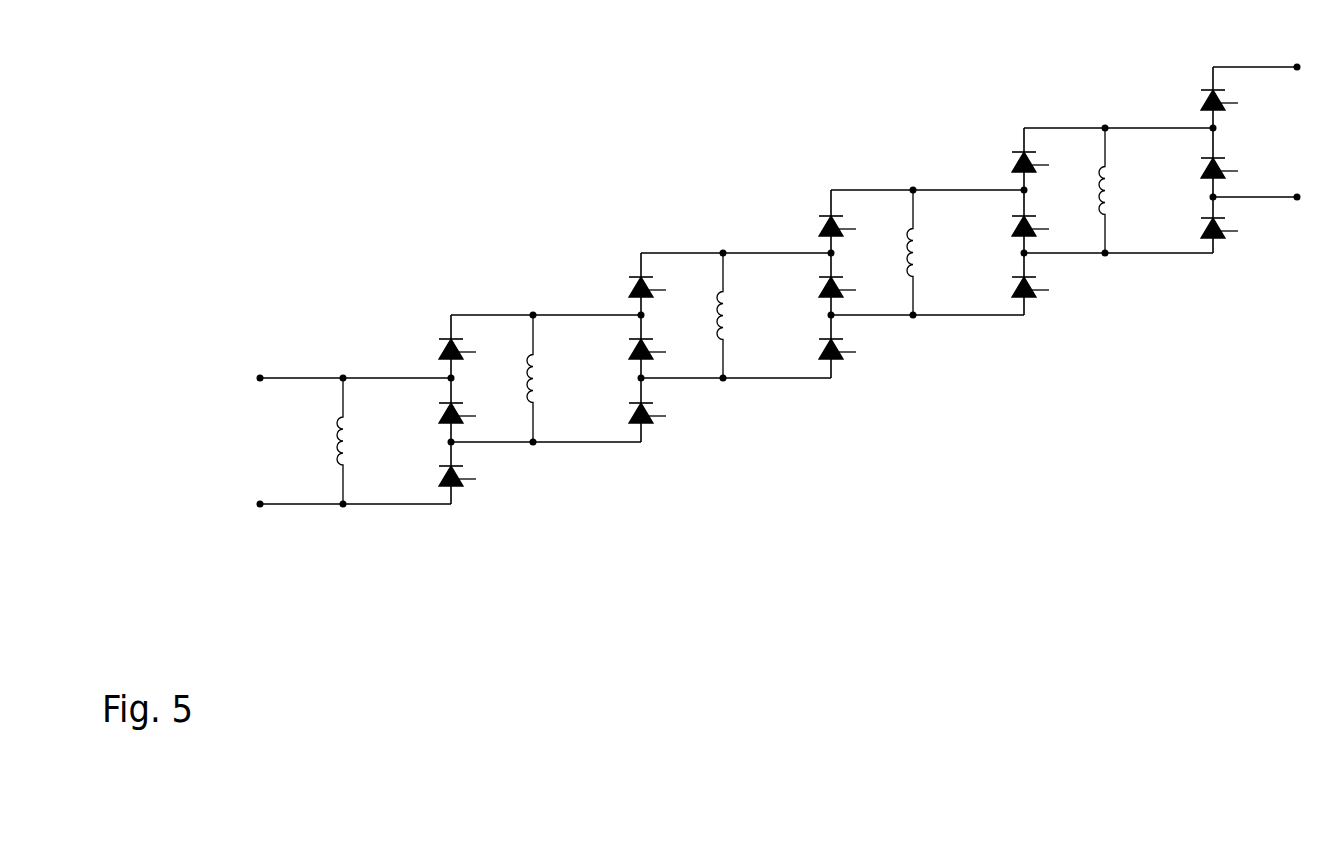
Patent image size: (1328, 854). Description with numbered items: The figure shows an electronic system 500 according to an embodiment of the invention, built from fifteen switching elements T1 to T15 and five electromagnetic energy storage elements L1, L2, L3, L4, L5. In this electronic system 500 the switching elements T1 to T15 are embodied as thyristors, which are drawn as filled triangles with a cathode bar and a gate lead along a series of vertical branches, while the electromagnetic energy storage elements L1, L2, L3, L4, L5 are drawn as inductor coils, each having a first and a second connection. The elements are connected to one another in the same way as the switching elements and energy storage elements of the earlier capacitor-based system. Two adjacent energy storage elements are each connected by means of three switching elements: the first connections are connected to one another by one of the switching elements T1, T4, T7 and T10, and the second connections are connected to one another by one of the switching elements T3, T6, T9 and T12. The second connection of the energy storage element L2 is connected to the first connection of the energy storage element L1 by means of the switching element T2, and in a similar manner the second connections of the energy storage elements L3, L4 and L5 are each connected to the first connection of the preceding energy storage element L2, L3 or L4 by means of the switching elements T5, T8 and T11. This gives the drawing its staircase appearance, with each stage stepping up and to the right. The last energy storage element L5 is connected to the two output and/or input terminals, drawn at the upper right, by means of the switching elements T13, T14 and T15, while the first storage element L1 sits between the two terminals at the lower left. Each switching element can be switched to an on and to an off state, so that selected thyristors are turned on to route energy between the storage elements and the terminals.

The electronic system 500 is at (888, 420).
The switching element T1 is at (440, 348).
The switching element T2 is at (440, 412).
The switching element T3 is at (440, 475).
The switching element T4 is at (630, 348).
The switching element T5 is at (630, 412).
The switching element T6 is at (630, 286).
The switching element T7 is at (820, 286).
The switching element T8 is at (820, 348).
The switching element T9 is at (820, 225).
The switching element T10 is at (1006, 225).
The switching element T11 is at (1006, 286).
The switching element T12 is at (1006, 161).
The switching element T13 is at (1195, 167).
The switching element T14 is at (1195, 227).
The switching element T15 is at (1195, 99).
The electromagnetic energy storage element L1 is at (357, 441).
The electromagnetic energy storage element L2 is at (547, 378).
The electromagnetic energy storage element L3 is at (737, 315).
The electromagnetic energy storage element L4 is at (927, 252).
The electromagnetic energy storage element L5 is at (1119, 190).